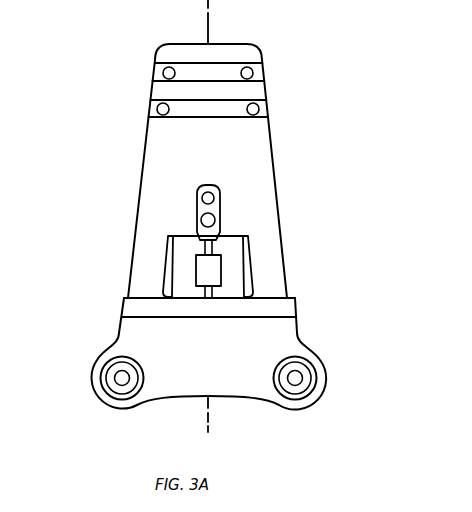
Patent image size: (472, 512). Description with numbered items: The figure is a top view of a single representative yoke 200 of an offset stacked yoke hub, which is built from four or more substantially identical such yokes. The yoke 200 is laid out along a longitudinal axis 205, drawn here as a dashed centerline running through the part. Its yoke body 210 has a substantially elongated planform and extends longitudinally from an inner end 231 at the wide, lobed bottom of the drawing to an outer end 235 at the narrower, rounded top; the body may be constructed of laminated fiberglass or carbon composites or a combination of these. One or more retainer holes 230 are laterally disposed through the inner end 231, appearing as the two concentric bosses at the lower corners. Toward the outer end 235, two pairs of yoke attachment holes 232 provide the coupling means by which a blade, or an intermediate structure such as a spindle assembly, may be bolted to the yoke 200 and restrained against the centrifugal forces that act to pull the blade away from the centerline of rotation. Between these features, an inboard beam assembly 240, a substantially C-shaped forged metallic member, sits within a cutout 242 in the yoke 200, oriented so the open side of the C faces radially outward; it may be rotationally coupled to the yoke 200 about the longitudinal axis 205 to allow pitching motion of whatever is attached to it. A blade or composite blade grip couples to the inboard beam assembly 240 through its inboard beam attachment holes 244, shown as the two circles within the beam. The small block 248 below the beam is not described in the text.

The yoke 200 is at (363, 133).
The longitudinal axis 205 is at (210, 13).
The yoke body 210 is at (147, 146).
The retainer holes 230 is at (105, 390).
The inner end 231 is at (305, 404).
The yoke attachment holes 232 is at (163, 73).
The outer end 235 is at (257, 90).
The inboard beam assembly 240 is at (221, 190).
The cutout 242 is at (252, 252).
The inboard beam attachment holes 244 is at (203, 198).
The connector block 248 is at (196, 270).